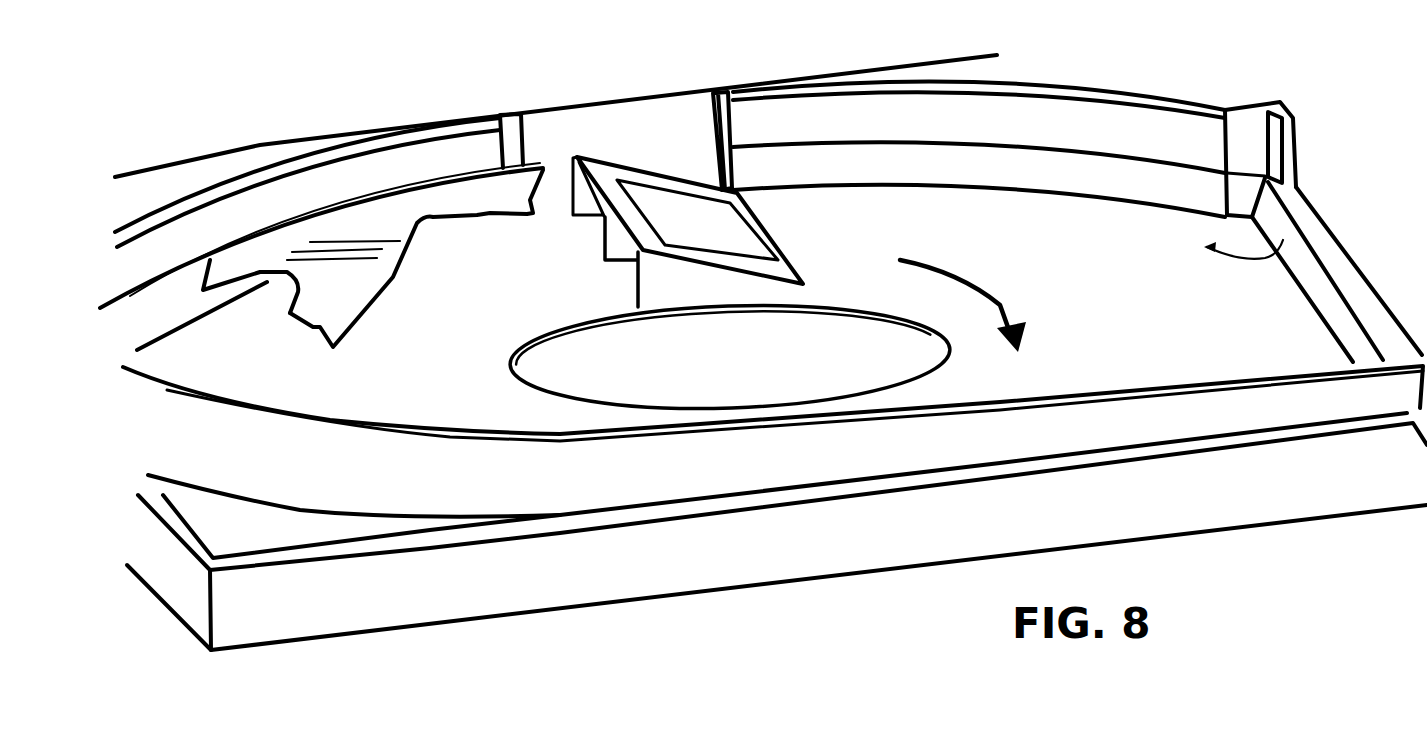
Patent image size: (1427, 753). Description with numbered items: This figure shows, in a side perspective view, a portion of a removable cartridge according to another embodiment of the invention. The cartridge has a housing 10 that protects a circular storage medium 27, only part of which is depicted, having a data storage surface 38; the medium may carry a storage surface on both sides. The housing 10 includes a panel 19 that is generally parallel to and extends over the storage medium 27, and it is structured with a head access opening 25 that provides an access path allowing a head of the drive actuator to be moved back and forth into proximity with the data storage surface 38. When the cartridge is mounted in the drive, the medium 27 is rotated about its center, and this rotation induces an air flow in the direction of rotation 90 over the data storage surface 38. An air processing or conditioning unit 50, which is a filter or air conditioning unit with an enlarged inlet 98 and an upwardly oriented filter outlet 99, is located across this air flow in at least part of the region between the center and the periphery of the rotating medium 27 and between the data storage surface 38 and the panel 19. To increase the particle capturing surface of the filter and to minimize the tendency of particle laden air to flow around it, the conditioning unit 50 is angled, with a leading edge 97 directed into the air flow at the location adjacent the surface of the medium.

The housing 10 is at (477, 580).
The panel 19 is at (1130, 329).
The head access opening 25 is at (1300, 232).
The storage medium 27 is at (323, 293).
The data storage surface 38 is at (407, 281).
The air processing or conditioning unit 50 is at (679, 179).
The direction of rotation 90 is at (967, 276).
The leading edge 97 is at (591, 219).
The enlarged inlet 98 is at (623, 268).
The filter outlet 99 is at (717, 222).